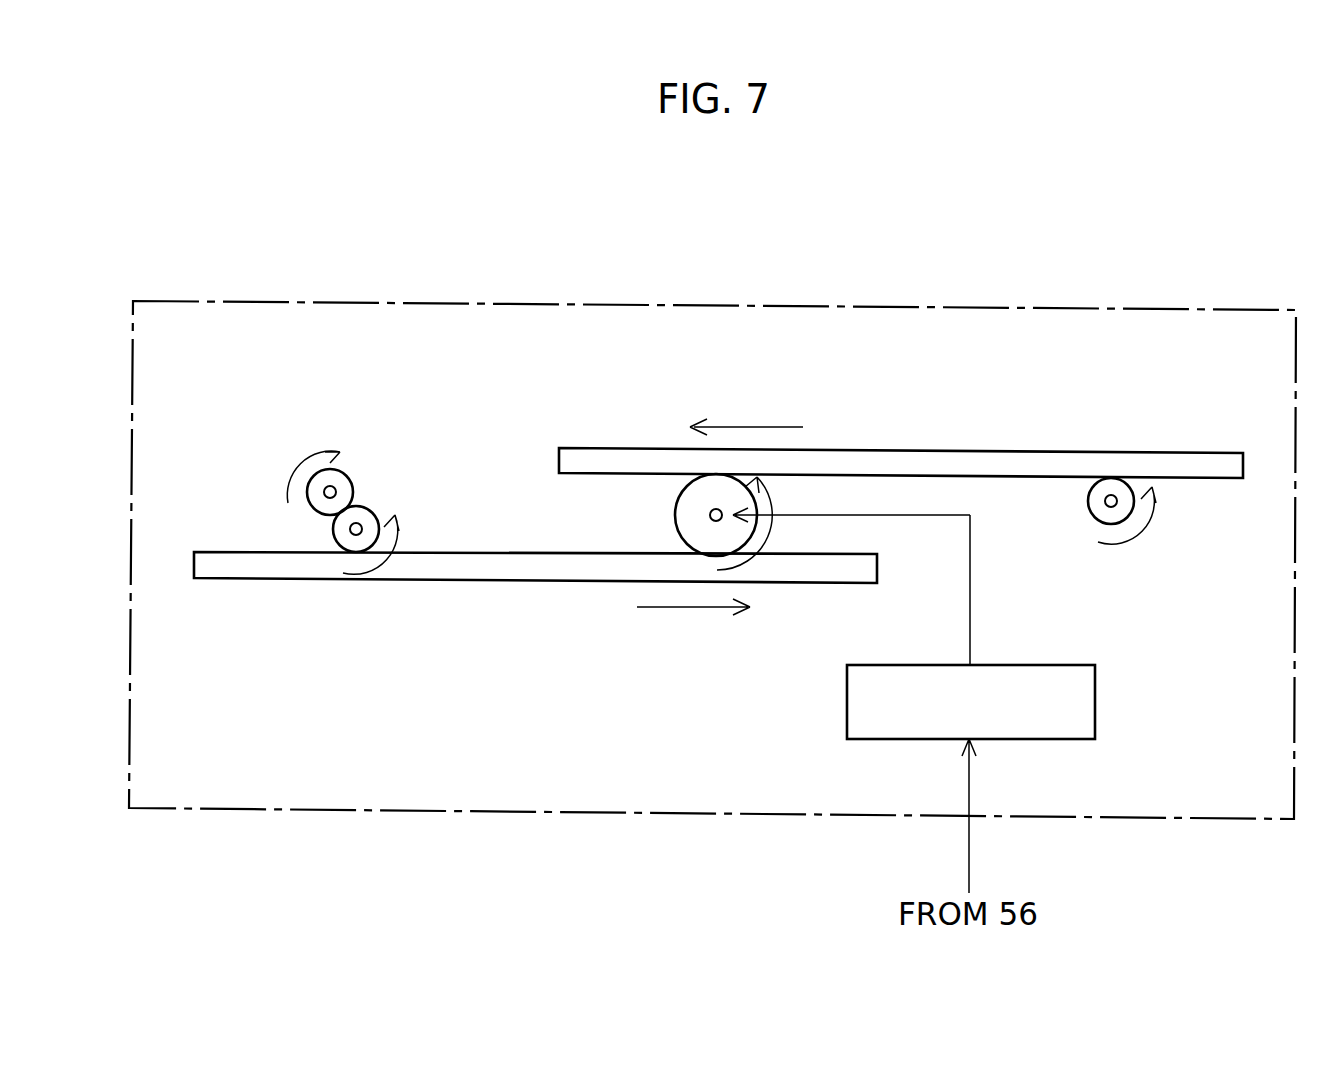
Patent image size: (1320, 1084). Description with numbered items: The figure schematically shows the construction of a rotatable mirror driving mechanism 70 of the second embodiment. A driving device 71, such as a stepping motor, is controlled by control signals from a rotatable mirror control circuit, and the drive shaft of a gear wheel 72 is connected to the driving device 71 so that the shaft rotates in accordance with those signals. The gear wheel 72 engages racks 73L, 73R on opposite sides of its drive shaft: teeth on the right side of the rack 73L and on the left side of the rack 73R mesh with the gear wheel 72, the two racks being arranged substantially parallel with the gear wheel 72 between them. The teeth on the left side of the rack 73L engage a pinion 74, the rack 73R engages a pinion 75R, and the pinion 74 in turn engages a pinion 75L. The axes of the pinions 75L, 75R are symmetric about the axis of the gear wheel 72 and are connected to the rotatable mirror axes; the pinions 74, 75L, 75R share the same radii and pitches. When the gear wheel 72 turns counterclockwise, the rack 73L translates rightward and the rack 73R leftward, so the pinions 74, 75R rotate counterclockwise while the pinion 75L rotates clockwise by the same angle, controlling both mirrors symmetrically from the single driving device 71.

The rotatable mirror driving mechanism 70 is at (1172, 822).
The driving device 71 is at (1095, 700).
The gear wheel 72 is at (676, 515).
The rack 73L is at (490, 583).
The rack 73R is at (597, 448).
The pinion 74 is at (374, 509).
The pinion 75L is at (349, 474).
The pinion 75R is at (1089, 511).